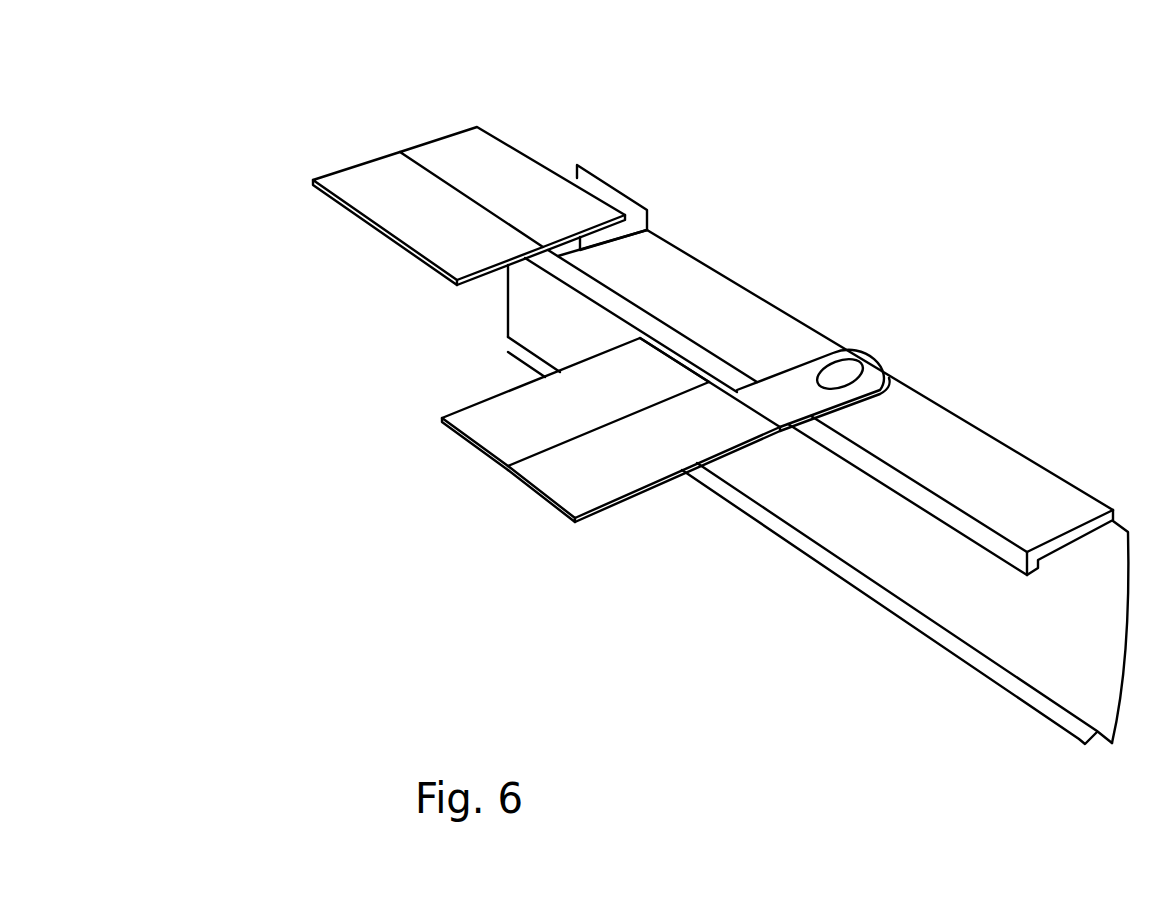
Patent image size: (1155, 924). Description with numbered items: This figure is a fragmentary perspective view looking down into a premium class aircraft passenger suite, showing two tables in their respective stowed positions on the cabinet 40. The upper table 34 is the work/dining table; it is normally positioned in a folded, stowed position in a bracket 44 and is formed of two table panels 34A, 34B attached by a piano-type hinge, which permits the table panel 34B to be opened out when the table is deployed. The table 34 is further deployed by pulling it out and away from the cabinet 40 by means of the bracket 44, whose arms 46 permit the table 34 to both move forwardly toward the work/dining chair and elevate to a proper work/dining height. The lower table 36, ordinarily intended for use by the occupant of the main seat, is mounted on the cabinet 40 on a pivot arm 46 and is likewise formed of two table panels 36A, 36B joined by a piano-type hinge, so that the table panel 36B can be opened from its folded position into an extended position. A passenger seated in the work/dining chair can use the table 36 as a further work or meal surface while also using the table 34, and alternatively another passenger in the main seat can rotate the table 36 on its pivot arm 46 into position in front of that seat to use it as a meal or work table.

The table 34 is at (445, 159).
The table panel 34A is at (513, 170).
The table panel 34B is at (390, 205).
The table 36 is at (561, 510).
The table panel 36A is at (557, 488).
The table panel 36B is at (490, 418).
The cabinet 40 is at (1040, 497).
The bracket 44 is at (648, 223).
The pivot arm 46 is at (853, 380).